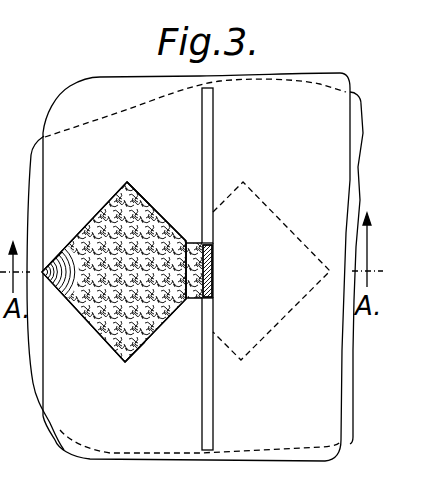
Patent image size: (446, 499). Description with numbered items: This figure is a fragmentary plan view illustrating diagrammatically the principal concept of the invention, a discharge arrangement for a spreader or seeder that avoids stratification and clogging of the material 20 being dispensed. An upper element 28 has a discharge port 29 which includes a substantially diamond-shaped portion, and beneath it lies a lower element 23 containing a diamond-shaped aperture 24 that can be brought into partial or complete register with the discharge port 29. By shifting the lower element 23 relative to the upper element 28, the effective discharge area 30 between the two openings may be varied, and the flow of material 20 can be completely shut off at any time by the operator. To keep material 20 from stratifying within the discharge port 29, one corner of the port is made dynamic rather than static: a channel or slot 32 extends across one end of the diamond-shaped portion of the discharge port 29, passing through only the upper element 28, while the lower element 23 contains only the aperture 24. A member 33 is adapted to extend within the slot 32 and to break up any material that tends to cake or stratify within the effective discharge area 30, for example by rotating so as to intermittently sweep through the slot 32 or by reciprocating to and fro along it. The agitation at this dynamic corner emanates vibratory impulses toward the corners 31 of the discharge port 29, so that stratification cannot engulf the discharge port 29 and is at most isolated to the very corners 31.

The material 20 is at (97, 325).
The lower element 23 is at (33, 387).
The aperture 24 is at (281, 232).
The upper element 28 is at (67, 423).
The discharge port 29 is at (152, 207).
The effective discharge area 30 is at (185, 292).
The corners 31 is at (128, 182).
The slot 32 is at (213, 117).
The member 33 is at (213, 270).